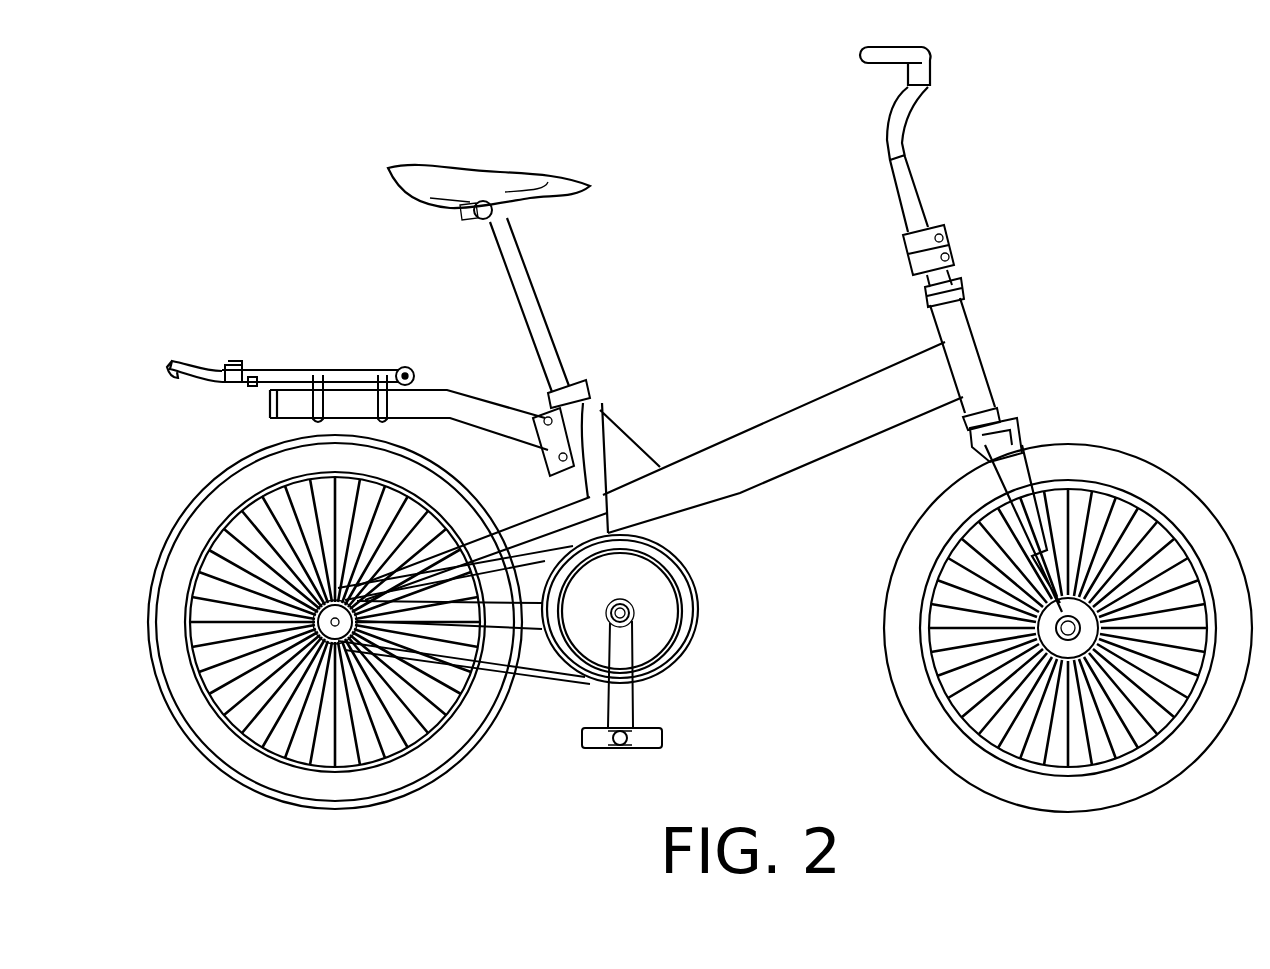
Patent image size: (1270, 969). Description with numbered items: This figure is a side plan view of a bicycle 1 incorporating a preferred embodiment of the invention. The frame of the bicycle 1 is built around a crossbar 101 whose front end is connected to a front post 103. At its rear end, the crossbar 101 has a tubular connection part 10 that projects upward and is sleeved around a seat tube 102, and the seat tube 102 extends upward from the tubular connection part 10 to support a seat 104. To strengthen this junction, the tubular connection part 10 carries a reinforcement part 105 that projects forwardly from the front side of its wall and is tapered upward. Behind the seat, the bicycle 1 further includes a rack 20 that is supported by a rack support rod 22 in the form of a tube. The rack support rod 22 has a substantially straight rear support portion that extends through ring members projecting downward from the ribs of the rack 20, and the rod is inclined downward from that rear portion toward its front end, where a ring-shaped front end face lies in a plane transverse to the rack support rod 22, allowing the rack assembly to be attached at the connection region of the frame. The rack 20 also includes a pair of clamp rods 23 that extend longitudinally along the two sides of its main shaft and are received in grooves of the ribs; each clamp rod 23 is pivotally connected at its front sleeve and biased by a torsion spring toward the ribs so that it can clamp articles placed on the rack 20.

The bicycle 1 is at (742, 236).
The tubular connection part 10 is at (584, 403).
The rack 20 is at (347, 363).
The rack support rod 22 is at (440, 397).
The clamp rod 23 is at (281, 362).
The crossbar 101 is at (820, 410).
The seat tube 102 is at (533, 294).
The front post 103 is at (965, 350).
The seat 104 is at (513, 170).
The reinforcement part 105 is at (621, 456).